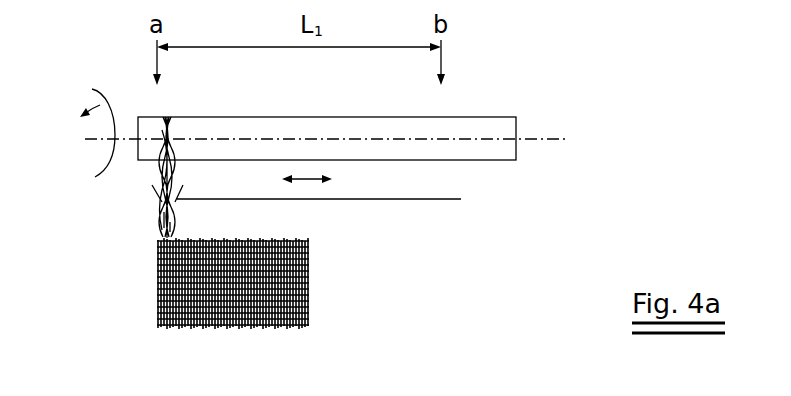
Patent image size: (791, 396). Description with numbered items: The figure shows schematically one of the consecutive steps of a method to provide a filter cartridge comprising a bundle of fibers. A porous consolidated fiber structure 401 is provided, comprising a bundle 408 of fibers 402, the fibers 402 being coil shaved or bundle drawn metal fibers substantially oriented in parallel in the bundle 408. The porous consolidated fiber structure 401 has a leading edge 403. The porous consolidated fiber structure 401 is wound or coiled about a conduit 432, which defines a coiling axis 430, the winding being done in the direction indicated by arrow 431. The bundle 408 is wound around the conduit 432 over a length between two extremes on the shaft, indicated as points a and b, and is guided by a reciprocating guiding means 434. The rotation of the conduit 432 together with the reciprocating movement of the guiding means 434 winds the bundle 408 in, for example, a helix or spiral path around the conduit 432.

The porous consolidated fiber structure 401 is at (160, 237).
The fibers 402 is at (173, 227).
The leading edge 403 is at (178, 116).
The bundle 408 is at (165, 220).
The coiling axis 430 is at (540, 138).
The arrow 431 is at (92, 89).
The conduit 432 is at (474, 117).
The reciprocating guiding means 434 is at (426, 200).